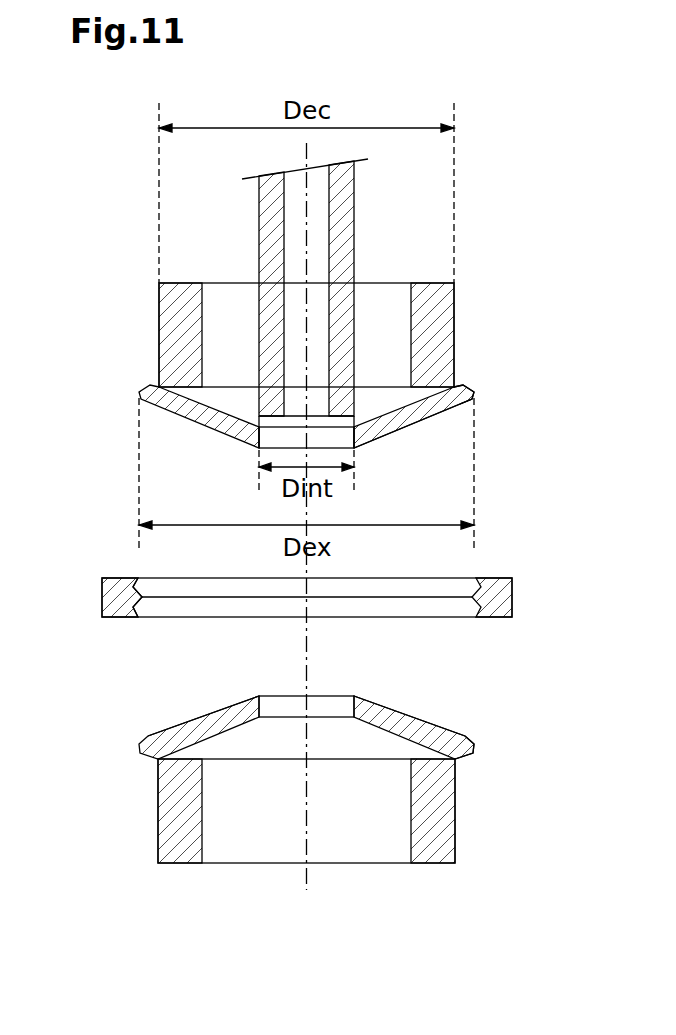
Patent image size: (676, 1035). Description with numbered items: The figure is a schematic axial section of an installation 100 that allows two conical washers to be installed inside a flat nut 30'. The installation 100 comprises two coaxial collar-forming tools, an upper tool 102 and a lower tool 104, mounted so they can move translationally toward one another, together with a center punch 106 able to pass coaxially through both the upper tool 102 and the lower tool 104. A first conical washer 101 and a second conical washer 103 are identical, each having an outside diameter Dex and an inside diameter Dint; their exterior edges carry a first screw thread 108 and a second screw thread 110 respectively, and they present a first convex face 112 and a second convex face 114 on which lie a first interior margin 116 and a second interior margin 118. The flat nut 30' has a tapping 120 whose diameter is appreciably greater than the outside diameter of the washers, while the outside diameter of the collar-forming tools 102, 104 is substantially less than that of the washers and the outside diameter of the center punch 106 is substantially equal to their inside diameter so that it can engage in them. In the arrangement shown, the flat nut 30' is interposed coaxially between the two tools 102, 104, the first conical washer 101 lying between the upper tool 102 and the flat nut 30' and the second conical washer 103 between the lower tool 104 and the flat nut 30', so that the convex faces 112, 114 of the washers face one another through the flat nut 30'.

The installation 100 is at (122, 226).
The first conical washer 101 is at (433, 407).
The upper coaxial tool 102 is at (158, 337).
The second conical washer 103 is at (437, 725).
The lower coaxial tool 104 is at (158, 817).
The center punch 106 is at (342, 242).
The first screw thread 108 is at (472, 392).
The second screw thread 110 is at (473, 755).
The first convex face 112 is at (393, 442).
The second convex face 114 is at (399, 699).
The first interior margin 116 is at (252, 446).
The second interior margin 118 is at (202, 713).
The tapping 120 is at (140, 612).
The flat nut 30' is at (271, 616).